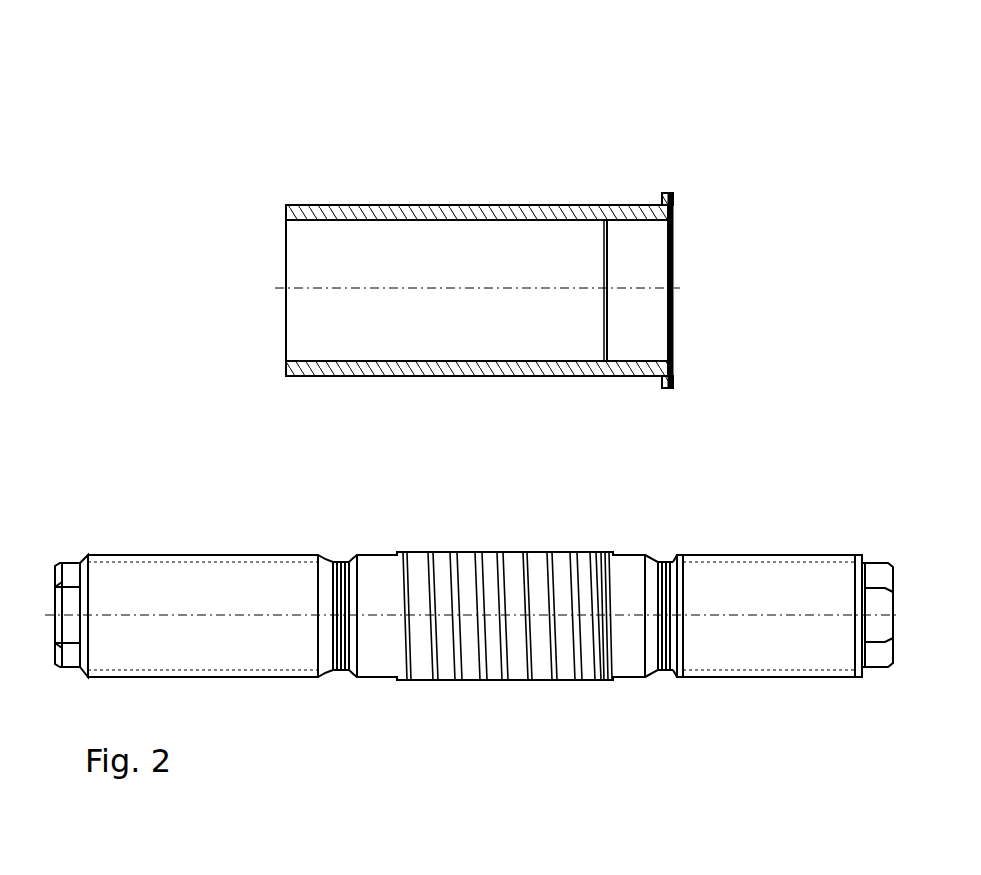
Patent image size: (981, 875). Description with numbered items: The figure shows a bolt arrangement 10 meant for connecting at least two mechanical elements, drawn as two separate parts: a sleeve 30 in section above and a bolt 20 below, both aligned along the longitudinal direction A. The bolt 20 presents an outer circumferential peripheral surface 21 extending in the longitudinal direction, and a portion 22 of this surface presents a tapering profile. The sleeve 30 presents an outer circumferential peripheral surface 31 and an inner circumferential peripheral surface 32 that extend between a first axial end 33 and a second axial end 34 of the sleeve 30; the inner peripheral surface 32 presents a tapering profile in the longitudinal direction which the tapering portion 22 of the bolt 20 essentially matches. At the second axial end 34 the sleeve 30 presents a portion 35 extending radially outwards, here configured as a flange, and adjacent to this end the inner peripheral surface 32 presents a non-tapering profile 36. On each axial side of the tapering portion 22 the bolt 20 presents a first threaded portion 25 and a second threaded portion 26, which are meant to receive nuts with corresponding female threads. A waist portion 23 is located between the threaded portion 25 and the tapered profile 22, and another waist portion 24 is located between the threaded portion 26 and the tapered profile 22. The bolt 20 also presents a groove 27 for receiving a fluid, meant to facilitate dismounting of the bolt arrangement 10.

The bolt arrangement 10 is at (134, 170).
The bolt 20 is at (95, 555).
The outer circumferential peripheral surface 21 is at (98, 672).
The portion with tapering profile 22 is at (535, 553).
The waist portion 23 is at (330, 677).
The waist portion 24 is at (655, 680).
The first threaded portion 25 is at (235, 672).
The second threaded portion 26 is at (780, 677).
The groove 27 is at (480, 680).
The sleeve 30 is at (318, 205).
The outer circumferential peripheral surface 31 is at (378, 205).
The inner circumferential peripheral surface 32 is at (314, 360).
The first axial end 33 is at (287, 270).
The second axial end 34 is at (672, 348).
The portion extending radially outwards 35 is at (672, 193).
The non-tapering profile 36 is at (648, 270).